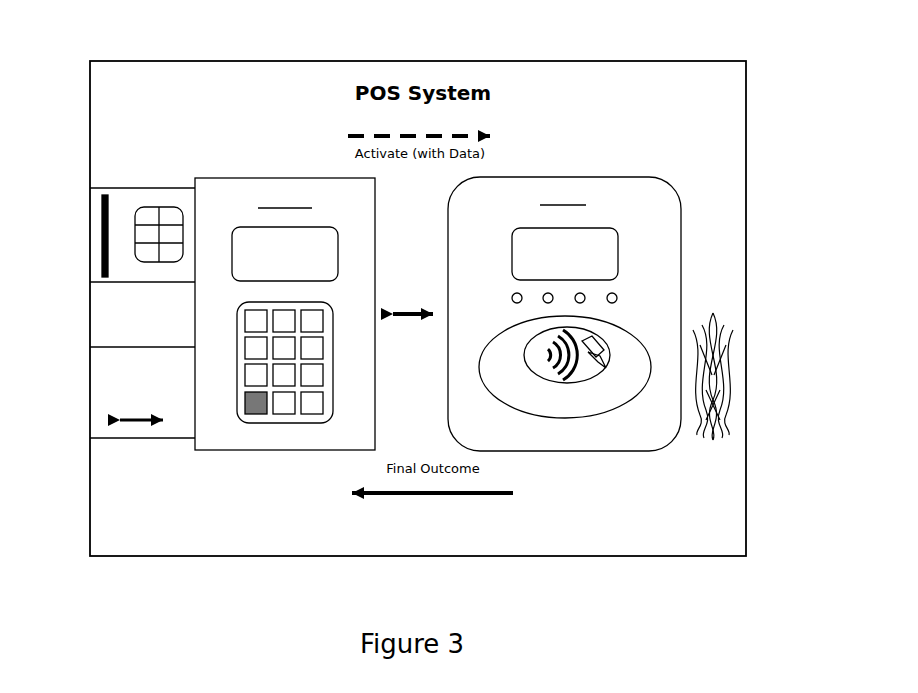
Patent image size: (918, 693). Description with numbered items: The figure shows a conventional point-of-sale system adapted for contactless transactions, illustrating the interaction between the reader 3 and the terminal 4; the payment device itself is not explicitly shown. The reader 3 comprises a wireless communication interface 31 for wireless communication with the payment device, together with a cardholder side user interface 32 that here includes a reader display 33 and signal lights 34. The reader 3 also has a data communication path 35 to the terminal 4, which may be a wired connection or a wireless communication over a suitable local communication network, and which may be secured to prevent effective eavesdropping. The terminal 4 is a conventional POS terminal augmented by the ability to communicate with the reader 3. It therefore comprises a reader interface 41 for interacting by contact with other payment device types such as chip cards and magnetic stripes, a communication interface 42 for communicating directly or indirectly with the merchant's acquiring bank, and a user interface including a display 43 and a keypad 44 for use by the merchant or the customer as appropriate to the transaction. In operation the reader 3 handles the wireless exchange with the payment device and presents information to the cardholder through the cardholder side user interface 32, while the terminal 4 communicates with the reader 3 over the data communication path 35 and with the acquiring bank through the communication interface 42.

The reader 3 is at (633, 198).
The wireless communication interface 31 is at (583, 415).
The cardholder side user interface 32 is at (657, 273).
The reader display 33 is at (622, 247).
The signal lights 34 is at (625, 302).
The data communication path 35 is at (408, 318).
The terminal 4 is at (218, 188).
The reader interface 41 is at (187, 262).
The communication interface 42 is at (125, 438).
The display 43 is at (248, 225).
The keypad 44 is at (271, 419).